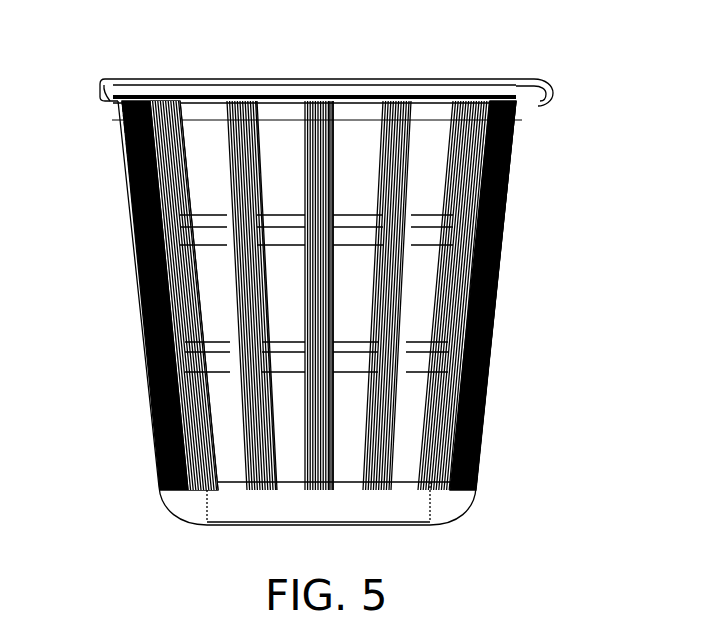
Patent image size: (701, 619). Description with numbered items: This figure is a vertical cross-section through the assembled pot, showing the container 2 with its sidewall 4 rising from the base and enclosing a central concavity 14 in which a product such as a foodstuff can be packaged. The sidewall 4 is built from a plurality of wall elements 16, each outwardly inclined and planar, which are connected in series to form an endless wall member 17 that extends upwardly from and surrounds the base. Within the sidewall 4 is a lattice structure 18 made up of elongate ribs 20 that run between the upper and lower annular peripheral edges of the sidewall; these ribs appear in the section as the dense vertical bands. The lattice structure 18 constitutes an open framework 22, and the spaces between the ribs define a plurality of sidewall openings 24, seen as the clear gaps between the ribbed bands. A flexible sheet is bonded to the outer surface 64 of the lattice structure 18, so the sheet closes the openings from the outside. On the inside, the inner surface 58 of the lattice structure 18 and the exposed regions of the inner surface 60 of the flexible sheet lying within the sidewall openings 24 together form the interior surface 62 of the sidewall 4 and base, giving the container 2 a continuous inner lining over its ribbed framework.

The container 2 is at (113, 80).
The sidewall 4 is at (162, 138).
The wall element 16 is at (208, 130).
The endless wall member 17 is at (263, 120).
The central concavity 14 is at (297, 133).
The lattice structure 18 is at (322, 115).
The elongate rib 20 is at (335, 135).
The open framework 22 is at (396, 108).
The sidewall opening 24 is at (423, 147).
The interior surface 62 is at (450, 157).
The inner surface of the flexible sheet 60 is at (425, 258).
The outer surface of the lattice structure 64 is at (500, 263).
The inner surface of the lattice structure 58 is at (243, 367).